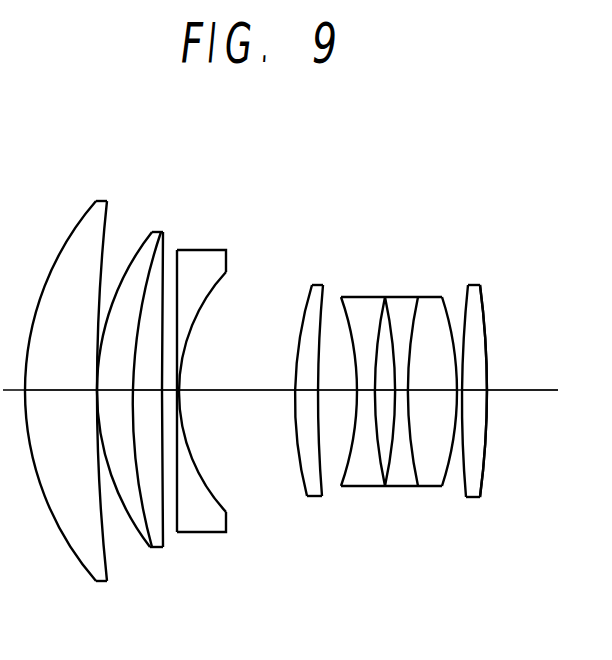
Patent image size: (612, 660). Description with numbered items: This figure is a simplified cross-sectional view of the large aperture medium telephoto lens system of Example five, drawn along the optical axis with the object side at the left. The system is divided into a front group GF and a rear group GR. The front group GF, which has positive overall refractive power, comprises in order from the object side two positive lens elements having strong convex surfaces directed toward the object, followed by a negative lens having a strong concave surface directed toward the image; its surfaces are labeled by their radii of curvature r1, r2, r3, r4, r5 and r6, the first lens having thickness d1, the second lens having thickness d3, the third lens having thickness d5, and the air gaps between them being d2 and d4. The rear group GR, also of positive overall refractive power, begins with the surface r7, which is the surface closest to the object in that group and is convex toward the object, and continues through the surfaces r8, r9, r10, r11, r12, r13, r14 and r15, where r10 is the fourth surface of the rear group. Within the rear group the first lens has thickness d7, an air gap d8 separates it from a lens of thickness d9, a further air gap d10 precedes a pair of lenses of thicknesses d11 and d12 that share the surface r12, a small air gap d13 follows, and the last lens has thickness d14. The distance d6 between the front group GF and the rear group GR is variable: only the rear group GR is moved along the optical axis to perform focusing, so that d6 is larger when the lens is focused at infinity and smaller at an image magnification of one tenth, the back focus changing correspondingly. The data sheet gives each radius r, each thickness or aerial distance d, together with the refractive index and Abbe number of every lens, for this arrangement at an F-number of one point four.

The front group GF is at (128, 334).
The rear group GR is at (419, 294).
The radius of curvature of first lens surface r1 is at (95, 200).
The radius of curvature of second lens surface r2 is at (106, 200).
The radius of curvature of third lens surface r3 is at (152, 231).
The radius of curvature of fourth lens surface r4 is at (163, 231).
The radius of curvature of fifth lens surface r5 is at (177, 250).
The radius of curvature of sixth lens surface r6 is at (226, 271).
The radius of curvature of seventh lens surface r7 is at (312, 284).
The radius of curvature of eighth lens surface r8 is at (323, 284).
The radius of curvature of ninth lens surface r9 is at (342, 296).
The radius of curvature of tenth lens surface r10 is at (385, 296).
The radius of curvature of eleventh lens surface r11 is at (418, 296).
The radius of curvature of twelfth lens surface r12 is at (442, 296).
The radius of curvature of thirteenth lens surface r13 is at (468, 284).
The radius of curvature of fourteenth lens surface r14 is at (480, 284).
The radius of curvature of fifteenth lens surface r15 is at (484, 284).
The thickness of first lens d1 is at (60, 391).
The aerial distance between first and second lenses d2 is at (100, 391).
The thickness of second lens d3 is at (118, 391).
The aerial distance between second and third lenses d4 is at (150, 391).
The thickness of third lens d5 is at (170, 391).
The variable aerial distance between front and rear groups d6 is at (250, 391).
The thickness of fourth lens d7 is at (304, 392).
The aerial distance between fourth and fifth lenses d8 is at (333, 392).
The thickness of fifth lens d9 is at (362, 392).
The aerial distance between fifth and sixth lenses d10 is at (387, 392).
The thickness of sixth lens d11 is at (402, 392).
The thickness of seventh lens d12 is at (427, 392).
The aerial distance between seventh and eighth lenses d13 is at (475, 392).
The thickness of eighth lens d14 is at (487, 392).